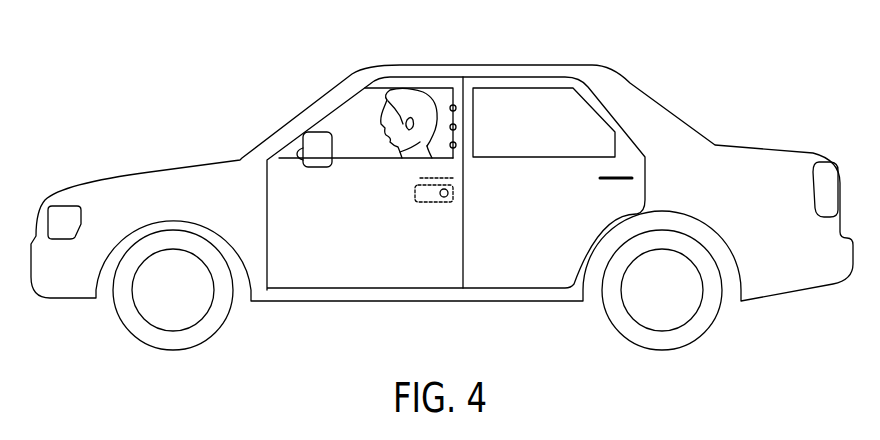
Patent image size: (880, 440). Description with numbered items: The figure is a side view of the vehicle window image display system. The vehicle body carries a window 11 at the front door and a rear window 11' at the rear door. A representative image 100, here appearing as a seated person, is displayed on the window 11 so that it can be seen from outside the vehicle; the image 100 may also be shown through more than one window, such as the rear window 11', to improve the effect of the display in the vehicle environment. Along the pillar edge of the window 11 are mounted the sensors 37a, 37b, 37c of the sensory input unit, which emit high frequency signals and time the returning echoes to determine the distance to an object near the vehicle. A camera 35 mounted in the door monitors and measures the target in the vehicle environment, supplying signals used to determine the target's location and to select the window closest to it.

The representative image 100 is at (400, 90).
The window 11 is at (409, 94).
The rear window 11' is at (544, 93).
The first ultrasonic sensor 37a is at (455, 106).
The second ultrasonic sensor 37b is at (456, 126).
The third ultrasonic sensor 37c is at (456, 147).
The camera 35 is at (419, 203).